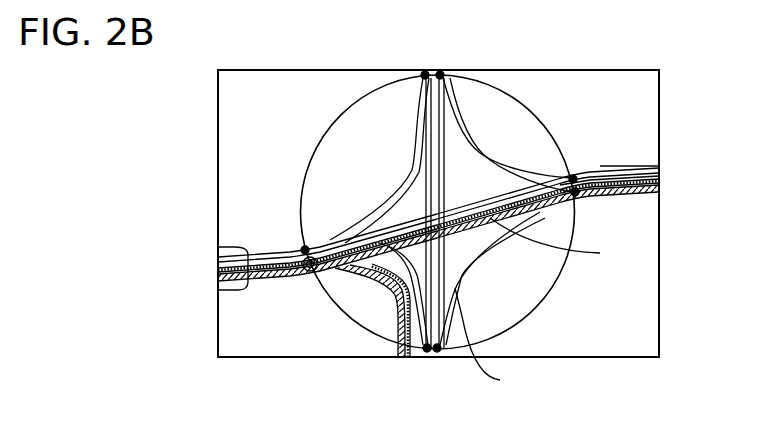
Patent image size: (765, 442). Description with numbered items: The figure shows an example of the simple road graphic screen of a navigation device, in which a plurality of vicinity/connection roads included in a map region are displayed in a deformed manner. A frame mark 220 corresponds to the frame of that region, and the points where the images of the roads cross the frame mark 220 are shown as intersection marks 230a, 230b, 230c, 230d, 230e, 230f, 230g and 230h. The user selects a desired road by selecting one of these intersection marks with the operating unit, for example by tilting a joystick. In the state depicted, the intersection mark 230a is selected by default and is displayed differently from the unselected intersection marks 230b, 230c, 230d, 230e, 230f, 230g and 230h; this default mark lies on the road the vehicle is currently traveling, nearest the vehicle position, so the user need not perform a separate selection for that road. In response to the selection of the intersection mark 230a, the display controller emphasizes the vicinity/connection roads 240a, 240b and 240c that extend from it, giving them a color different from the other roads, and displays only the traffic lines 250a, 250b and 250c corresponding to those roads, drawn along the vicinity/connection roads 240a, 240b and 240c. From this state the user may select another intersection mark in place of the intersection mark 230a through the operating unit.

The frame mark 220 is at (548, 122).
The intersection mark 230a is at (305, 270).
The intersection mark 230b is at (305, 250).
The intersection mark 230c is at (426, 72).
The intersection mark 230d is at (441, 73).
The intersection mark 230e is at (573, 176).
The intersection mark 230f is at (600, 166).
The intersection mark 230g is at (437, 350).
The intersection mark 230h is at (426, 350).
The vicinity/connection road 240a is at (218, 247).
The vicinity/connection road 240b is at (600, 253).
The vicinity/connection road 240c is at (500, 380).
The traffic line 250a is at (218, 290).
The traffic line 250b is at (330, 275).
The traffic line 250c is at (623, 192).